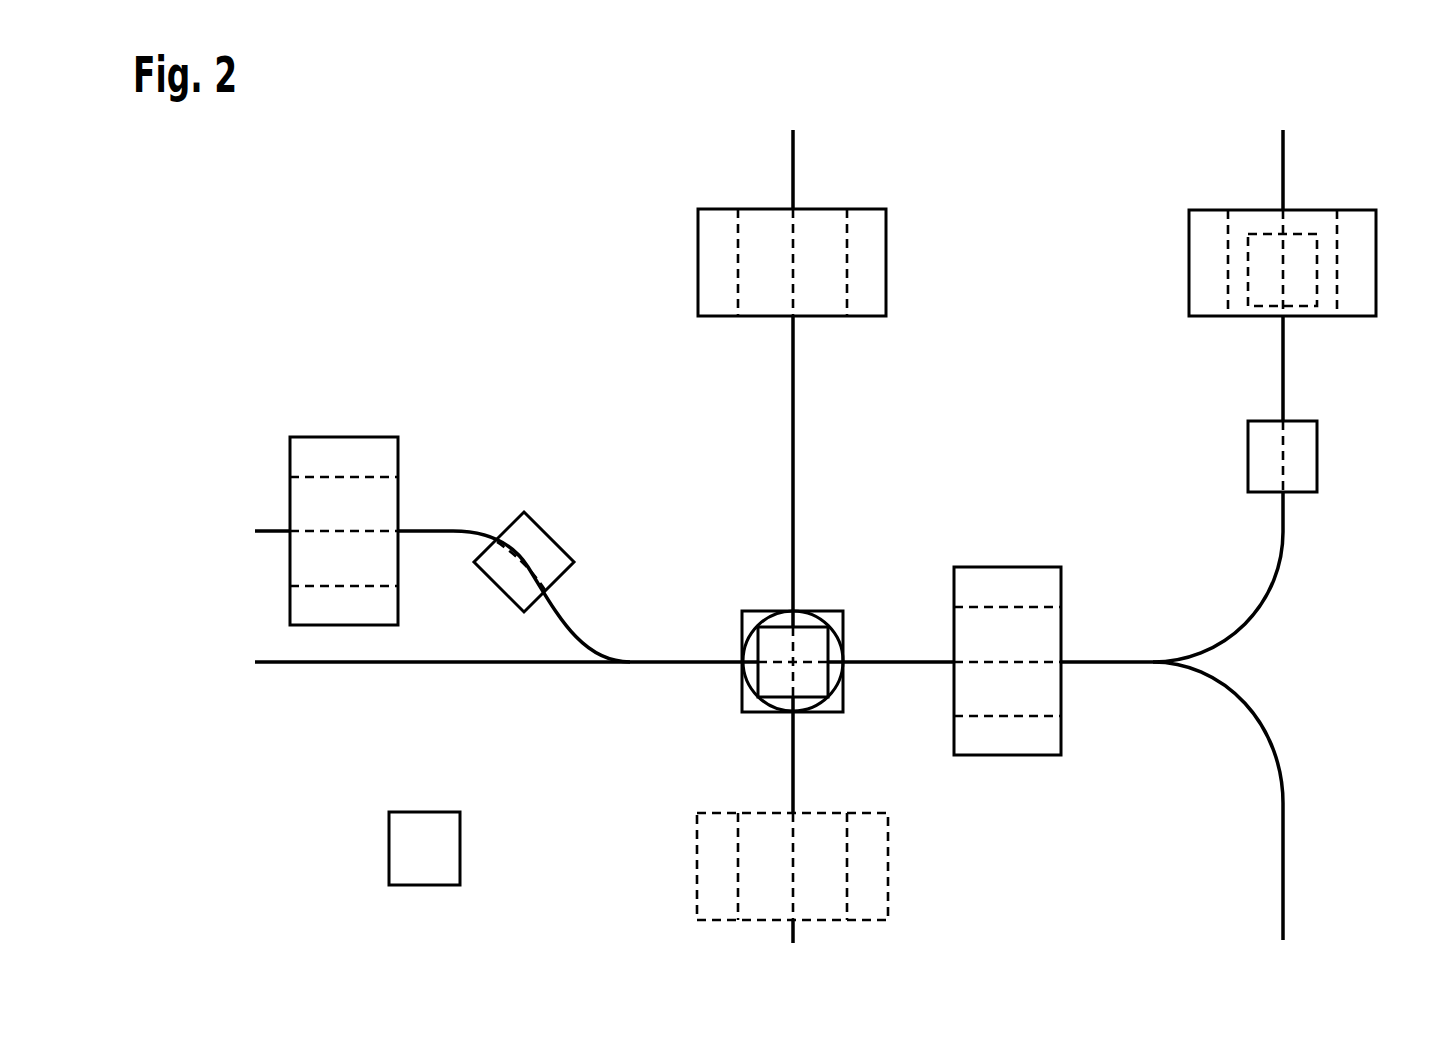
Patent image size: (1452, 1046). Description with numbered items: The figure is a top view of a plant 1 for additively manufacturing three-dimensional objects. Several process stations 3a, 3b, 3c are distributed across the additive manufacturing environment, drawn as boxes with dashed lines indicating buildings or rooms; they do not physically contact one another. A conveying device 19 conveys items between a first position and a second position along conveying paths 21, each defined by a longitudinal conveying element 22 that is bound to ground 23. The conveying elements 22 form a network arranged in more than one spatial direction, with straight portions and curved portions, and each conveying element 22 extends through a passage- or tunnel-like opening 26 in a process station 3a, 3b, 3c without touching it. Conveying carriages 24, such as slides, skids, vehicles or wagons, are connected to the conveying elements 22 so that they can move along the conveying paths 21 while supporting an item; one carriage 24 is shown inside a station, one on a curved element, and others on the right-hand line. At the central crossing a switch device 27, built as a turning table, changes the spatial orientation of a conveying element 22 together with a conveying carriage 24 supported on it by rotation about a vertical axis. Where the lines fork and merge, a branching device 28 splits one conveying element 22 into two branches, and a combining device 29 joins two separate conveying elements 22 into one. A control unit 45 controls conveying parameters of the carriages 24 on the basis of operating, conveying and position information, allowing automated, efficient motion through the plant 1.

The plant 1 is at (378, 246).
The process station 3a is at (861, 564).
The process station 3b is at (861, 564).
The process station 3c is at (362, 470).
The conveying device 19 is at (745, 558).
The conveying path 21 is at (292, 685).
The conveying element 22 is at (268, 662).
The ground 23 is at (1124, 822).
The conveying carriage 24 is at (540, 527).
The opening 26 is at (412, 511).
The switch device 27 is at (730, 712).
The branching device 28 is at (940, 667).
The combining device 29 is at (610, 685).
The control unit 45 is at (425, 812).